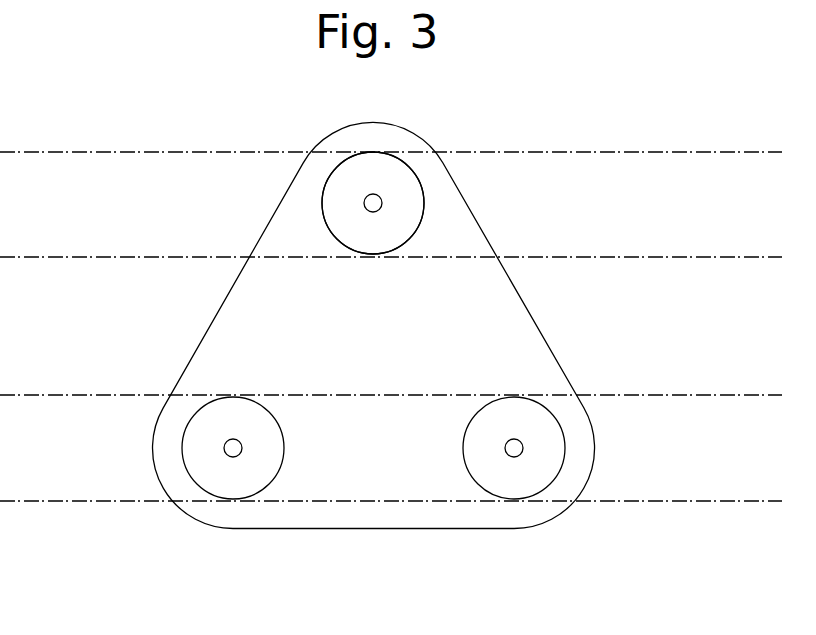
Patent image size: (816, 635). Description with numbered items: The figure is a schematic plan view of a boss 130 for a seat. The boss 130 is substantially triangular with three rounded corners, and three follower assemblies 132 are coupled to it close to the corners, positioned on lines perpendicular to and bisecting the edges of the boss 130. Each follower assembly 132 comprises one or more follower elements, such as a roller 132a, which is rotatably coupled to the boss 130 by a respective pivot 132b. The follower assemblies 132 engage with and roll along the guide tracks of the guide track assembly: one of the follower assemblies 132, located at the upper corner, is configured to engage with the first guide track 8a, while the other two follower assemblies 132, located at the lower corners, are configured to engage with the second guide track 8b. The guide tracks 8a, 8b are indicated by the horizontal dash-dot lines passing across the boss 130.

The boss 130 is at (423, 138).
The follower assembly 132 is at (450, 207).
The roller 132a is at (368, 238).
The pivot 132b is at (365, 203).
The first guide track 8a is at (712, 152).
The second guide track 8b is at (727, 395).